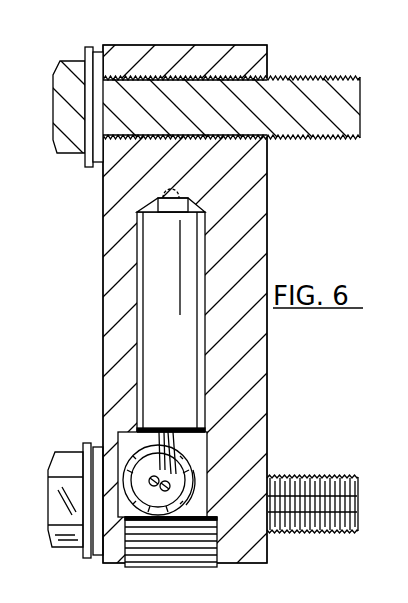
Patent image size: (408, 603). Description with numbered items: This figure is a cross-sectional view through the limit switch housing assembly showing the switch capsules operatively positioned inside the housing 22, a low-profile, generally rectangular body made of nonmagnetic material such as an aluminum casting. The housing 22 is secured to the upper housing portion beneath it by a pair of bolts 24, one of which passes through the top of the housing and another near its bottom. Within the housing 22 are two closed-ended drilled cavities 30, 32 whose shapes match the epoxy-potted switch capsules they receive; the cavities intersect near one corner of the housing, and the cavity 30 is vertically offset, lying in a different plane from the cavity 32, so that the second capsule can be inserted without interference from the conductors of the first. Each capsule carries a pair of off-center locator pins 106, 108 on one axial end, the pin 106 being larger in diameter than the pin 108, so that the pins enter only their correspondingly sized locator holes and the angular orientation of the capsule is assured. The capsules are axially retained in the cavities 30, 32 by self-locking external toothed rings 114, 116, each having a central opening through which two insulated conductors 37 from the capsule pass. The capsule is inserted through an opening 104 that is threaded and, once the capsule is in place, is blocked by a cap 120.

The housing 22 is at (260, 172).
The bolts 24 is at (303, 90).
The cavity 30 is at (110, 443).
The cavity 32 is at (138, 260).
The insulated conductors 37 is at (127, 458).
The opening 104 is at (218, 542).
The locator pin 106 is at (163, 212).
The locator pin 108 is at (160, 190).
The self-locking external toothed ring 114 is at (197, 462).
The self-locking external toothed ring 116 is at (205, 432).
The cap 120 is at (216, 517).